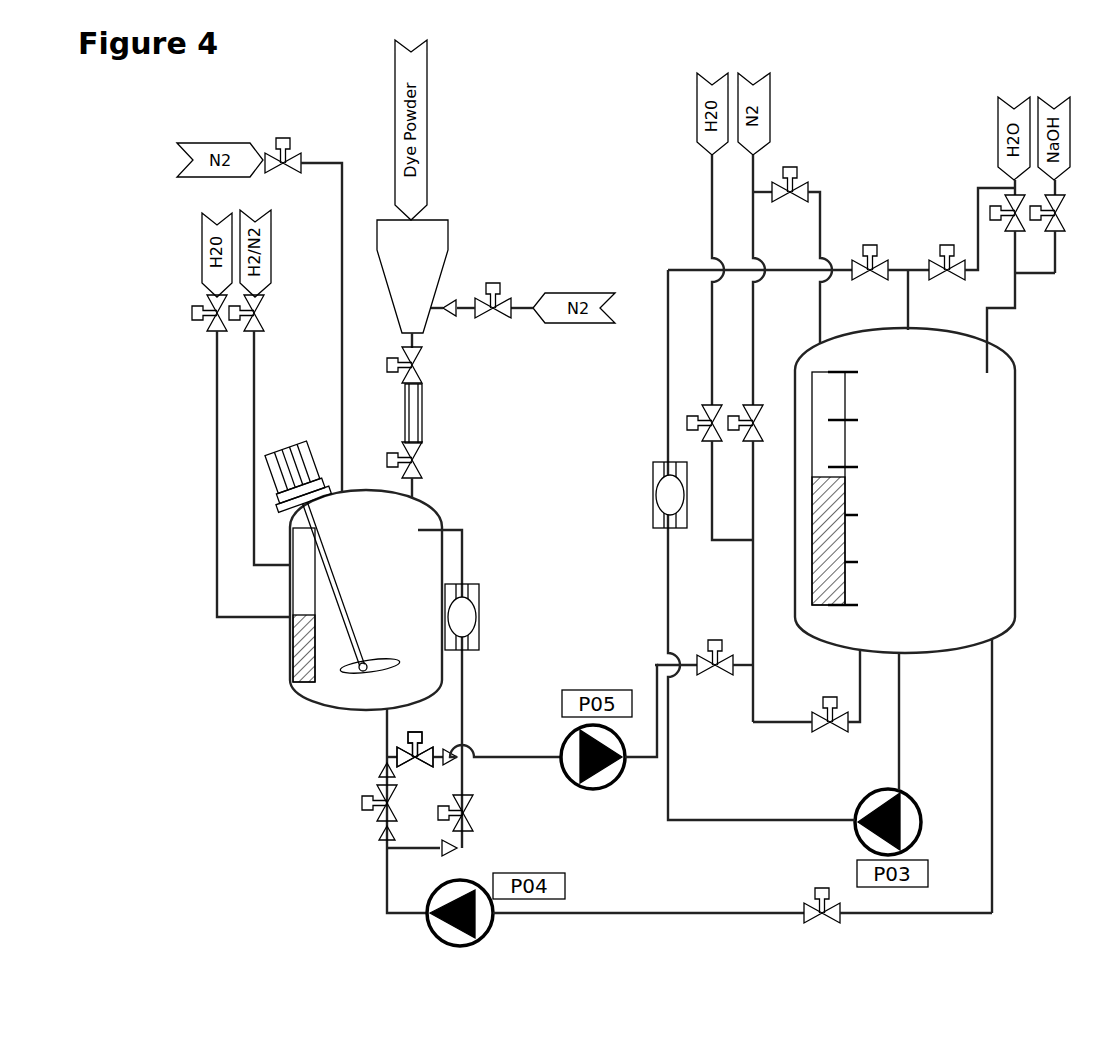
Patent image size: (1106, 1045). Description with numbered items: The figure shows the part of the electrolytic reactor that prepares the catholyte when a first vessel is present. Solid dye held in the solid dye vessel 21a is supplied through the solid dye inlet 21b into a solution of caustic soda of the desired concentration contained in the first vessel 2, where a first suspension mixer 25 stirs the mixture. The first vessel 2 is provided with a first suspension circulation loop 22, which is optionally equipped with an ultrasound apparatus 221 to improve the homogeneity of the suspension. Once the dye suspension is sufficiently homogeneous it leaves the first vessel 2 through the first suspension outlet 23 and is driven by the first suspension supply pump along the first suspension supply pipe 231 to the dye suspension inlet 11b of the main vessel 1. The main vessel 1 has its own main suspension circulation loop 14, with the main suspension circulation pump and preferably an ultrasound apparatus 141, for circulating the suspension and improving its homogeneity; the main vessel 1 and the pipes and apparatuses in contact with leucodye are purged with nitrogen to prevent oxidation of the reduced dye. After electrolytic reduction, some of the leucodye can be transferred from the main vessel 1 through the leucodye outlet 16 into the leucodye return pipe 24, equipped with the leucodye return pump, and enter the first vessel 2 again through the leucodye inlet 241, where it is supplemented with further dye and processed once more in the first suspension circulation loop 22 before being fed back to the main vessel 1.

The main vessel 1 is at (983, 457).
The first vessel 2 is at (366, 600).
The dye suspension inlet 11b is at (860, 650).
The main suspension circulation loop 14 is at (670, 615).
The ultrasound apparatus in main suspension circulation loop 141 is at (657, 490).
The leucodye outlet 16 is at (992, 642).
The solid dye vessel 21a is at (438, 268).
The solid dye inlet 21b is at (422, 413).
The first suspension circulation loop 22 is at (462, 548).
The ultrasound apparatus in first suspension circulation loop 221 is at (470, 620).
The first suspension outlet 23 is at (416, 822).
The first suspension supply pipe 231 is at (490, 752).
The leucodye return pipe 24 is at (695, 915).
The leucodye inlet 241 is at (387, 713).
The first suspension mixer 25 is at (297, 440).